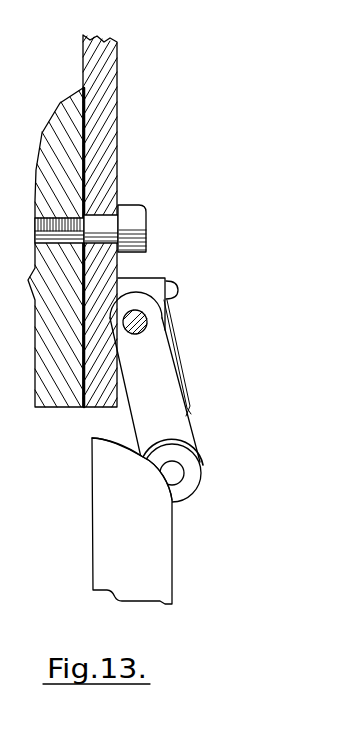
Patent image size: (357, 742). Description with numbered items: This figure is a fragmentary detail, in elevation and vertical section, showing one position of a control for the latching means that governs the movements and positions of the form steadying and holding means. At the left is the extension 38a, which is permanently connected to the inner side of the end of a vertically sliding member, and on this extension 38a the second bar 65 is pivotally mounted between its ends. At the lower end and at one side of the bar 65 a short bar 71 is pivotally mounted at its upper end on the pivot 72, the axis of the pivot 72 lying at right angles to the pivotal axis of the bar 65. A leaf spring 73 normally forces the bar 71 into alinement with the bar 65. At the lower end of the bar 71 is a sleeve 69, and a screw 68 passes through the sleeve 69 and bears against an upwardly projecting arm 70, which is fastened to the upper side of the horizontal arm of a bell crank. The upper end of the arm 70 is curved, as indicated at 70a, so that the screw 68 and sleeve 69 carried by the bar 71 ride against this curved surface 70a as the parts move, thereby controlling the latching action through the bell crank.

The extension 38a is at (45, 298).
The second bar 65 is at (114, 168).
The screw 68 is at (175, 473).
The sleeve 69 is at (196, 481).
The upwardly projecting arm 70 is at (102, 525).
The curved upper end 70a is at (136, 458).
The short bar 71 is at (165, 387).
The pivot 72 is at (147, 322).
The leaf spring 73 is at (180, 350).